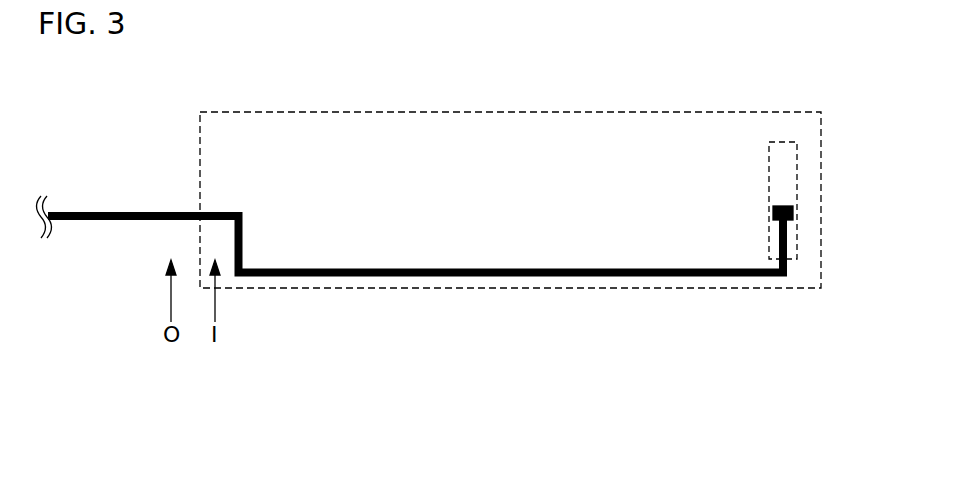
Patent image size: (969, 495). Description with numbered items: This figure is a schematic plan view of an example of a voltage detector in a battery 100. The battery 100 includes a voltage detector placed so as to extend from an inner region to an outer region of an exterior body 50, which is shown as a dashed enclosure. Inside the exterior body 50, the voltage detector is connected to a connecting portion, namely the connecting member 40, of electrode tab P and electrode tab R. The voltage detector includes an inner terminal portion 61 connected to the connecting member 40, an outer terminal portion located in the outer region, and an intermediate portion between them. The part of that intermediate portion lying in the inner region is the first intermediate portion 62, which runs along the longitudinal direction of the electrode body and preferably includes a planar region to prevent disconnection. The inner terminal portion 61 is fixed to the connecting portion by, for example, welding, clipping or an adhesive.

The battery 100 is at (790, 66).
The exterior body 50 is at (503, 112).
The connecting member 40 is at (782, 168).
The inner terminal portion 61 is at (793, 210).
The first intermediate portion 62 is at (512, 277).